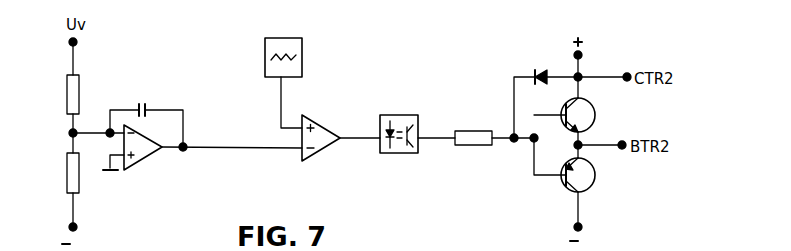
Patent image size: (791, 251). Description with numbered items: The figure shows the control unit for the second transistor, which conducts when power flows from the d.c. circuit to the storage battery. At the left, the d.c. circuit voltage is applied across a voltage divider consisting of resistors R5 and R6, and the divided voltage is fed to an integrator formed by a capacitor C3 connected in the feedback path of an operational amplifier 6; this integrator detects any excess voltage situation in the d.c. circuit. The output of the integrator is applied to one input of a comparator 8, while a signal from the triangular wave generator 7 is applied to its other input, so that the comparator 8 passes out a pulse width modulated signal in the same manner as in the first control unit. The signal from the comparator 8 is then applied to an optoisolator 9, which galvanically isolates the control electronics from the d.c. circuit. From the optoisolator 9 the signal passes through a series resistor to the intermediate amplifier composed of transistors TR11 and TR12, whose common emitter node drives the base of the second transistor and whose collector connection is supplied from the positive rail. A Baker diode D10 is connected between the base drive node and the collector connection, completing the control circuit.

The operational amplifier 6 is at (146, 158).
The triangular wave generator 7 is at (302, 50).
The comparator 8 is at (325, 126).
The optoisolator 9 is at (418, 118).
The resistor R5 is at (58, 94).
The resistor R6 is at (56, 173).
The capacitor C3 is at (146, 114).
The Baker diode D10 is at (570, 92).
The transistor TR11 is at (586, 115).
The transistor TR12 is at (585, 165).